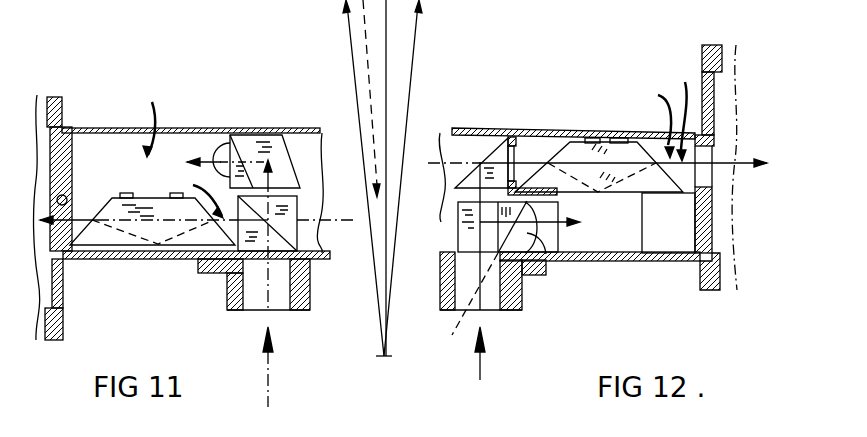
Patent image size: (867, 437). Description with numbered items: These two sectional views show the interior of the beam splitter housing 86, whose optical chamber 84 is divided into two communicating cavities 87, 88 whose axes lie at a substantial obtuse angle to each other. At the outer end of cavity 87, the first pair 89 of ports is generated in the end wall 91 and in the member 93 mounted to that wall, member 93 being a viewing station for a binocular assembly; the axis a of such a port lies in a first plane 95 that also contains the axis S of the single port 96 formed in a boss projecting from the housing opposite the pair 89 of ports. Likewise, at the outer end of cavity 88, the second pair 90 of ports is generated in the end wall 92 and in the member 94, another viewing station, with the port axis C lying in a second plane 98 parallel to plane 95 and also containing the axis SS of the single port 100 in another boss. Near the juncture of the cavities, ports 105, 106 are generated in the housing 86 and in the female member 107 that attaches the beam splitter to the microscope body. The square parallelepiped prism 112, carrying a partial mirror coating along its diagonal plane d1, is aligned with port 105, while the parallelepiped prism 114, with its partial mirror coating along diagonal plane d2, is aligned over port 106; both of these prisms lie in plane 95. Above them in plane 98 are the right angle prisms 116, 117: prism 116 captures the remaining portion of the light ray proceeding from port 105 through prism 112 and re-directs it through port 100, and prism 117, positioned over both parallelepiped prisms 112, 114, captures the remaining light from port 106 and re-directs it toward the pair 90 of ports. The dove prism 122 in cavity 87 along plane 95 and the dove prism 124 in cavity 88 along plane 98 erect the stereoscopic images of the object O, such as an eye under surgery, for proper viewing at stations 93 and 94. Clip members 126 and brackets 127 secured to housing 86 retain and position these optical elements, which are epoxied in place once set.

In FIG. 11, the member 93 is at (55, 96).
In FIG. 11, the housing 86 is at (72, 124).
In FIG. 12, the housing 86 is at (702, 46).
In FIG. 11, the cavity 87 is at (112, 131).
In FIG. 11, the optical chamber 84 is at (183, 148).
In FIG. 12, the optical chamber 84 is at (655, 116).
In FIG. 11, the dove prism 122 is at (145, 196).
In FIG. 11, the axis of single port SS is at (216, 157).
In FIG. 11, the single port 100 is at (240, 157).
In FIG. 11, the right angle prism 116 is at (283, 152).
In FIG. 11, the end wall 91 is at (72, 136).
In FIG. 11, the first pair of ports 89 is at (62, 200).
In FIG. 11, the clip member 126 is at (129, 193).
In FIG. 12, the clip member 126 is at (628, 138).
In FIG. 11, the port axis a is at (222, 216).
In FIG. 11, the first plane 95 is at (328, 219).
In FIG. 11, the square parallelepiped prism 112 is at (290, 230).
In FIG. 11, the diagonal plane d1 is at (297, 280).
In FIG. 11, the female member 107 is at (227, 287).
In FIG. 12, the female member 107 is at (520, 297).
In FIG. 11, the port 105 is at (224, 310).
In FIG. 11, the object O is at (383, 358).
In FIG. 12, the second plane 98 is at (434, 163).
In FIG. 12, the right angle prism 117 is at (487, 157).
In FIG. 12, the bracket 127 is at (526, 142).
In FIG. 12, the cavity 88 is at (548, 142).
In FIG. 12, the dove prism 124 is at (590, 155).
In FIG. 12, the port axis C is at (685, 112).
In FIG. 12, the member 94 is at (718, 45).
In FIG. 12, the second pair of ports 90 is at (703, 180).
In FIG. 12, the end wall 92 is at (695, 240).
In FIG. 12, the parallelepiped prism 114 is at (470, 230).
In FIG. 12, the axis of single port S is at (483, 290).
In FIG. 12, the port 106 is at (500, 298).
In FIG. 12, the diagonal plane d2 is at (522, 272).
In FIG. 12, the single port 96 is at (547, 261).